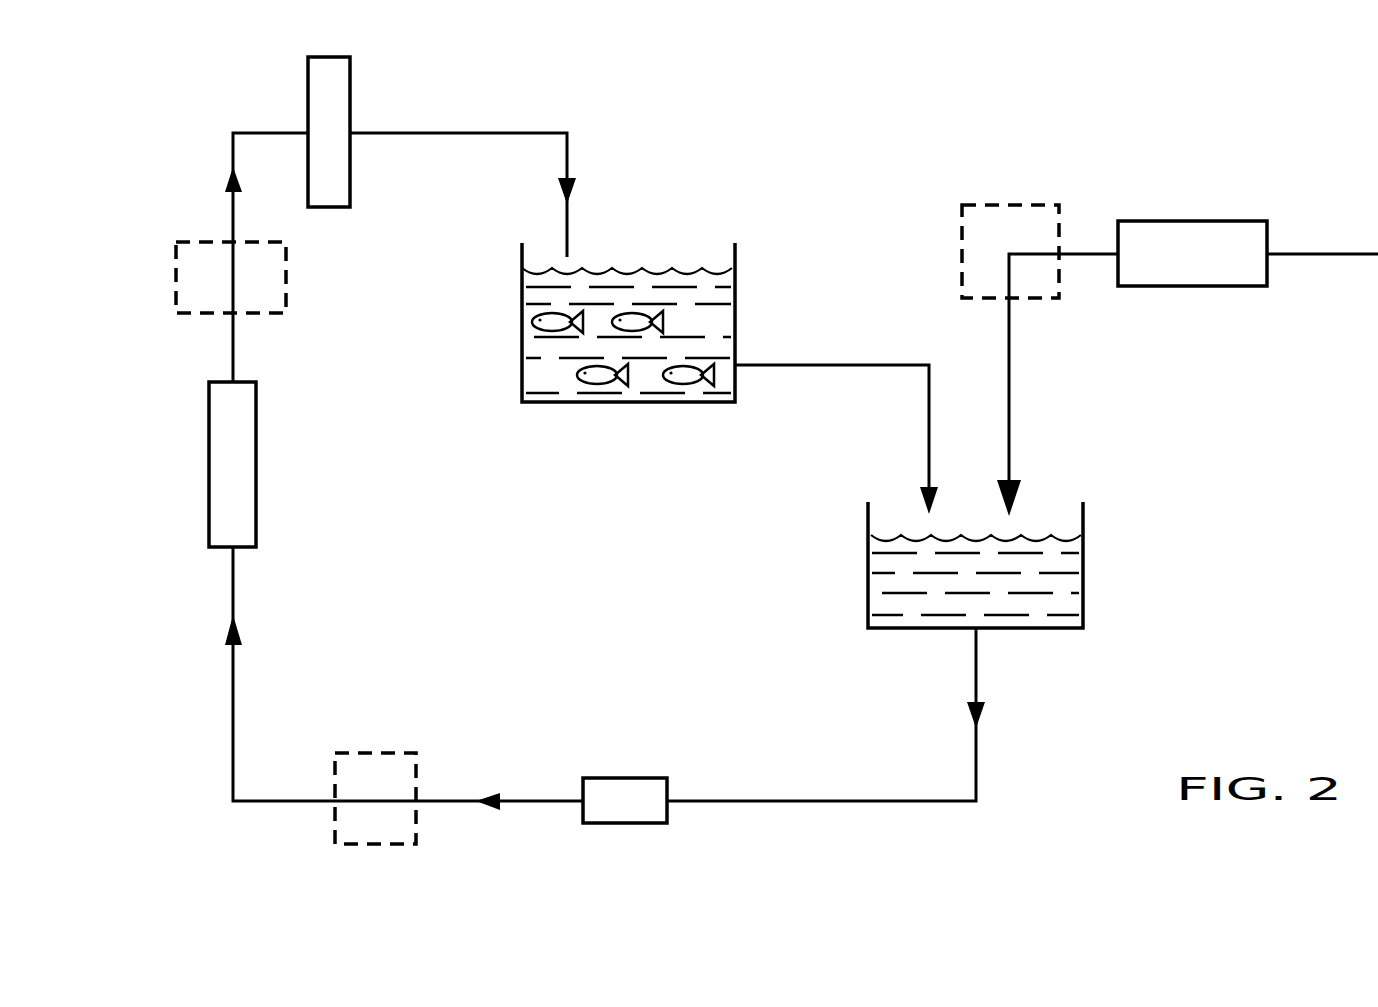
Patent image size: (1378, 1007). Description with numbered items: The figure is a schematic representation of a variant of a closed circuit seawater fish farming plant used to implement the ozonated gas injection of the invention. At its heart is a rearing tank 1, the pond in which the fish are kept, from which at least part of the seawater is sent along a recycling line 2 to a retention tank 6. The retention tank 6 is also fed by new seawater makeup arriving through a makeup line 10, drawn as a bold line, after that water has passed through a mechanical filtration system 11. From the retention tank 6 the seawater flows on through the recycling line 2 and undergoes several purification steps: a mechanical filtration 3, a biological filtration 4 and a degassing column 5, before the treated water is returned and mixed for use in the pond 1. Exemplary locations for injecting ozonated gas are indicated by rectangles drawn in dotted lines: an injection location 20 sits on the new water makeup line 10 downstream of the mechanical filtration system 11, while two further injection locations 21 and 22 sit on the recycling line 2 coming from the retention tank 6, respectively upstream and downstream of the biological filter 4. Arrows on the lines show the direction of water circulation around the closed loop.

The rearing tank 1 is at (522, 355).
The recycling line 2 is at (827, 367).
The mechanical filtration 3 is at (625, 778).
The biological filtration 4 is at (256, 465).
The degassing column 5 is at (350, 92).
The retention tank 6 is at (868, 578).
The new seawater makeup line 10 is at (1330, 256).
The mechanical filtration system 11 is at (1195, 286).
The ozonated gas injection location 20 is at (962, 226).
The ozonated gas injection location 21 is at (405, 753).
The ozonated gas injection location 22 is at (286, 287).